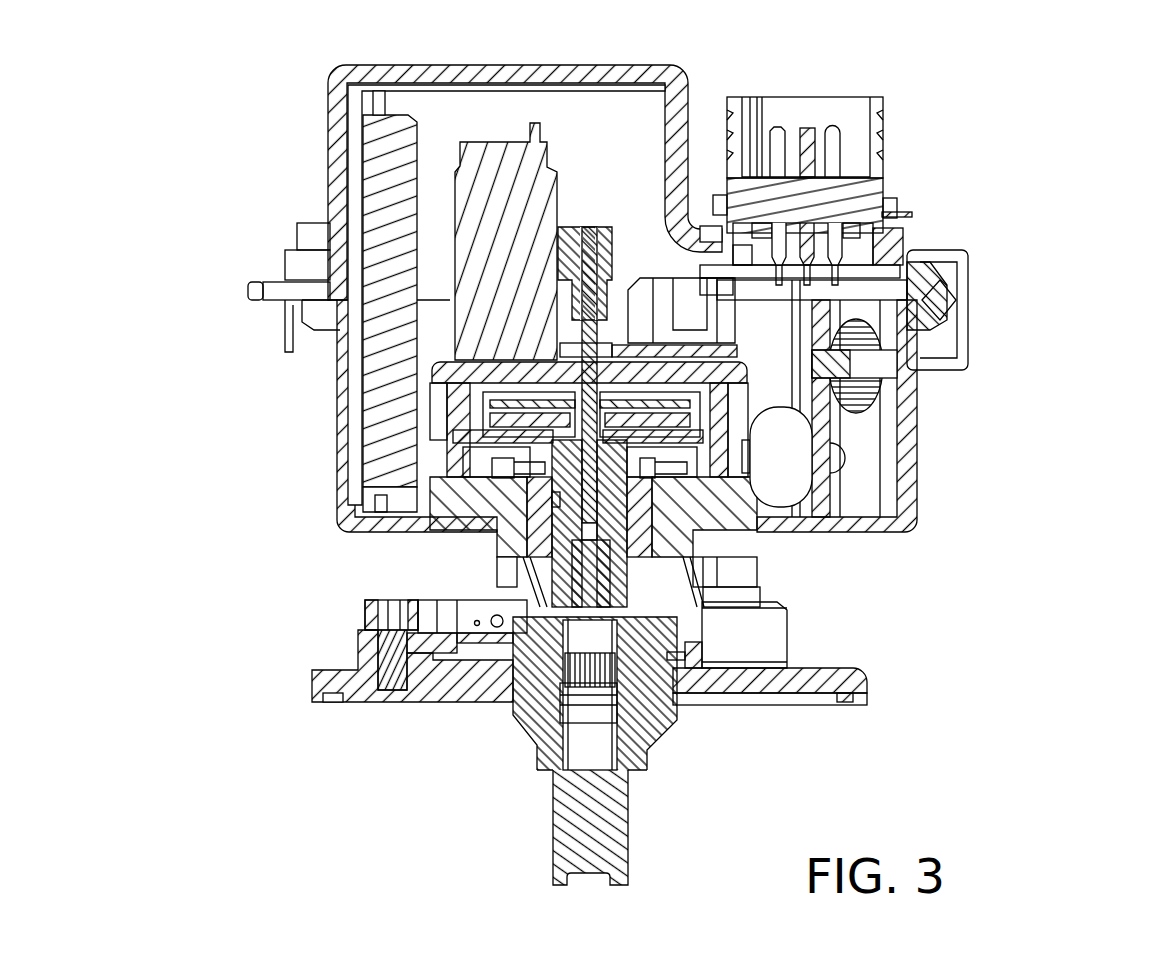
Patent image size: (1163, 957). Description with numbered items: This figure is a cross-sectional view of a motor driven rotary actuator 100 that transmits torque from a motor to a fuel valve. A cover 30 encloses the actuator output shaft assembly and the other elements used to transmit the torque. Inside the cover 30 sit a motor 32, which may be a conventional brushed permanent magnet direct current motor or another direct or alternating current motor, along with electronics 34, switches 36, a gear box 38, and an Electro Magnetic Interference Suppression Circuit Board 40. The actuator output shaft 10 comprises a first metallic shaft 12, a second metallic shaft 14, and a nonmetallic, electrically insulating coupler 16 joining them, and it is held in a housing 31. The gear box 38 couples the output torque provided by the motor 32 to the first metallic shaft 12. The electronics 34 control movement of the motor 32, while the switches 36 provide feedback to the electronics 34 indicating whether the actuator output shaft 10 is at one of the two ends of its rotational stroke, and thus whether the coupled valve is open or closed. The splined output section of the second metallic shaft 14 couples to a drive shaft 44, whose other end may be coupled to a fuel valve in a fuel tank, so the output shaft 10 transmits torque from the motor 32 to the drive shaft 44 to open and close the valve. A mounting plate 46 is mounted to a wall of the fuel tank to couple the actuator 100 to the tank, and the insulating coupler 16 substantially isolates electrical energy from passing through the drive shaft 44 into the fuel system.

The motor driven rotary actuator 100 is at (1040, 131).
The actuator output shaft 10 is at (530, 525).
The first metallic shaft 12 is at (612, 515).
The second metallic shaft 14 is at (620, 618).
The nonmetallic, electrically insulating coupler 16 is at (547, 605).
The cover 30 is at (524, 72).
The housing 31 is at (440, 495).
The motor 32 is at (490, 141).
The electronics 34 is at (360, 202).
The switches 36 is at (662, 282).
The gear box 38 is at (493, 408).
The Electro Magnetic Interference Suppression Circuit Board 40 is at (828, 430).
The drive shaft 44 is at (628, 806).
The mounting plate 46 is at (783, 705).